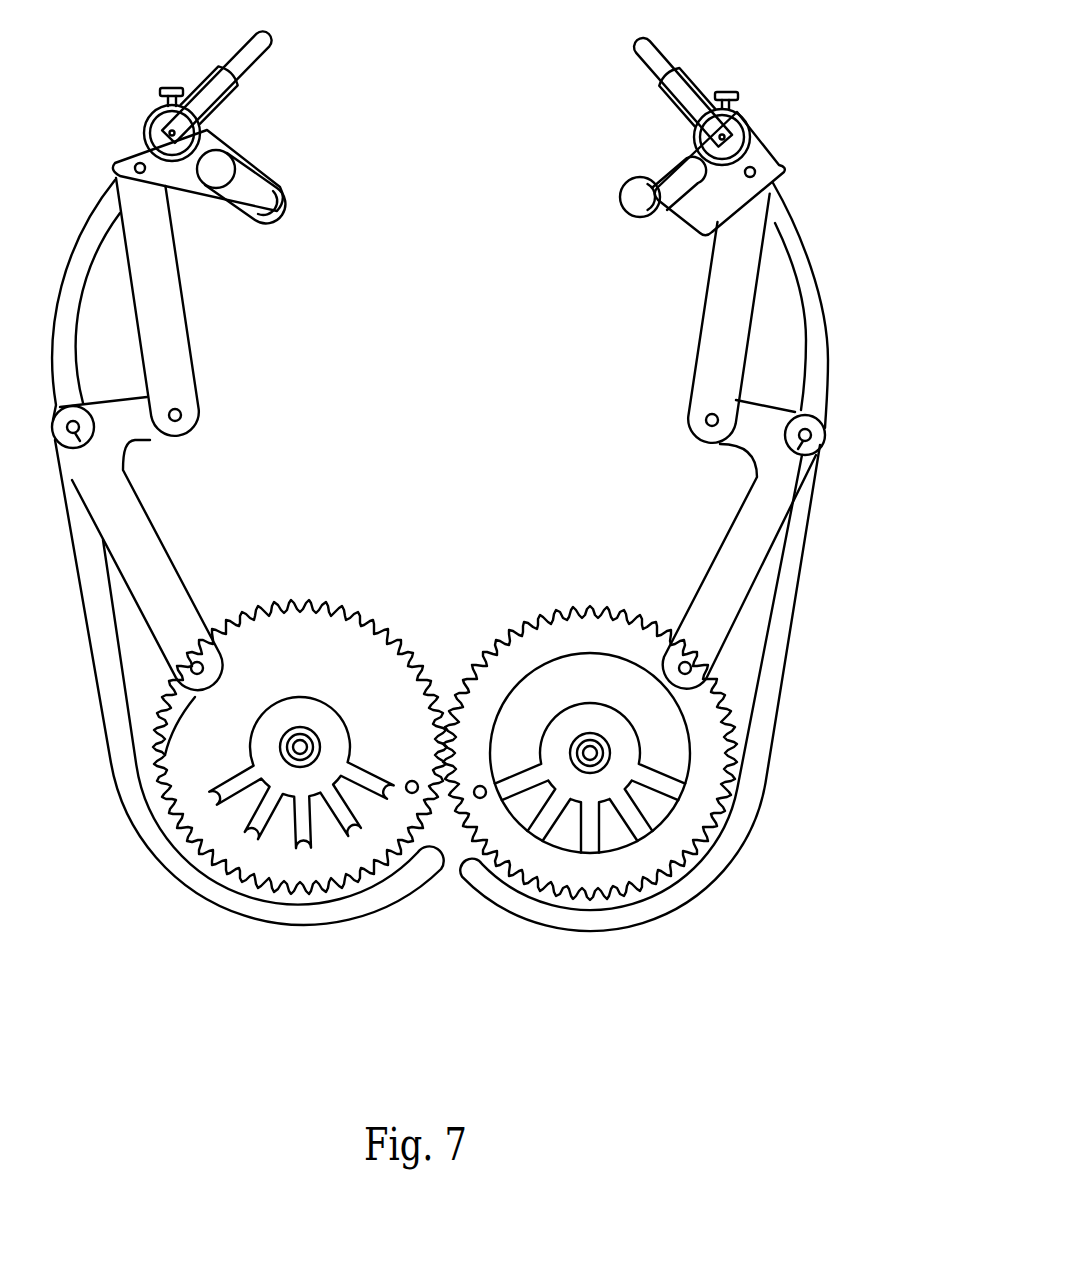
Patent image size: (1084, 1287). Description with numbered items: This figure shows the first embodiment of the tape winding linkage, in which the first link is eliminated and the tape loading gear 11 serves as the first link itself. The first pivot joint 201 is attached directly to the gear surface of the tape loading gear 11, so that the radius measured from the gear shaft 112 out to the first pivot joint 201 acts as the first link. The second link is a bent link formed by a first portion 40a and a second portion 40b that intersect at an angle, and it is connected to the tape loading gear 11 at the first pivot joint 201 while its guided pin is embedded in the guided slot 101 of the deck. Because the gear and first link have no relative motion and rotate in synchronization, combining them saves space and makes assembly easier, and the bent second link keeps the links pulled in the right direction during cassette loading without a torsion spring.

The tape loading gear 11 is at (355, 855).
The first portion of the second link 40a is at (760, 400).
The second portion of the second link 40b is at (787, 527).
The guided slot of the deck 101 is at (785, 227).
The gear shaft 112 is at (302, 745).
The first pivot joint 201 is at (205, 663).